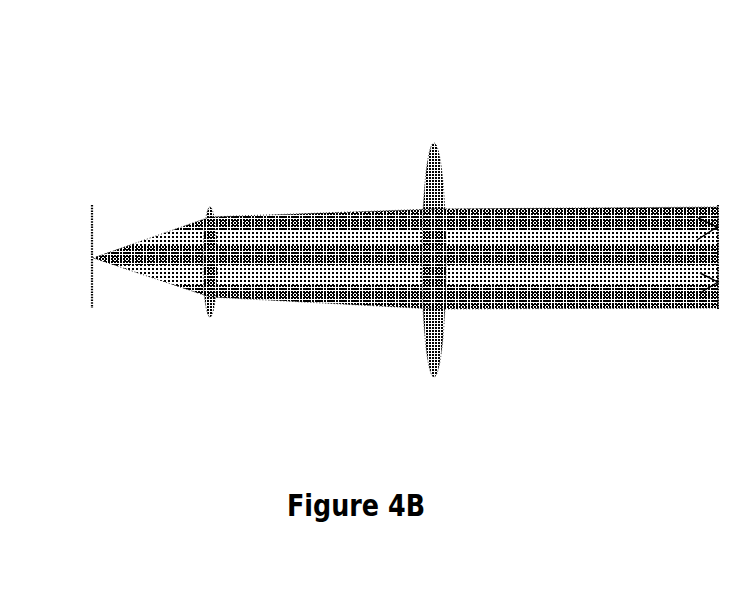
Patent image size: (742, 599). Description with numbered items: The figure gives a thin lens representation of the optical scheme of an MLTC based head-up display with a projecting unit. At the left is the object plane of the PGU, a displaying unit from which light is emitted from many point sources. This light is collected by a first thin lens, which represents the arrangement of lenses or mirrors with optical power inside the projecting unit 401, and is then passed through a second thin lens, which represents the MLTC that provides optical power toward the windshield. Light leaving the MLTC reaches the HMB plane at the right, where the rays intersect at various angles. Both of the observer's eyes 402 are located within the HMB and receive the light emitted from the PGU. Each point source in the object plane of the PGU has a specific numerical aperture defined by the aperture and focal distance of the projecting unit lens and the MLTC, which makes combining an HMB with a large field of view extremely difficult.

The picture generation unit PGU is at (92, 200).
The projecting unit 401 is at (209, 190).
The element MLTC is at (434, 133).
The observer's eyes 402 is at (715, 281).
The element HMB is at (716, 200).